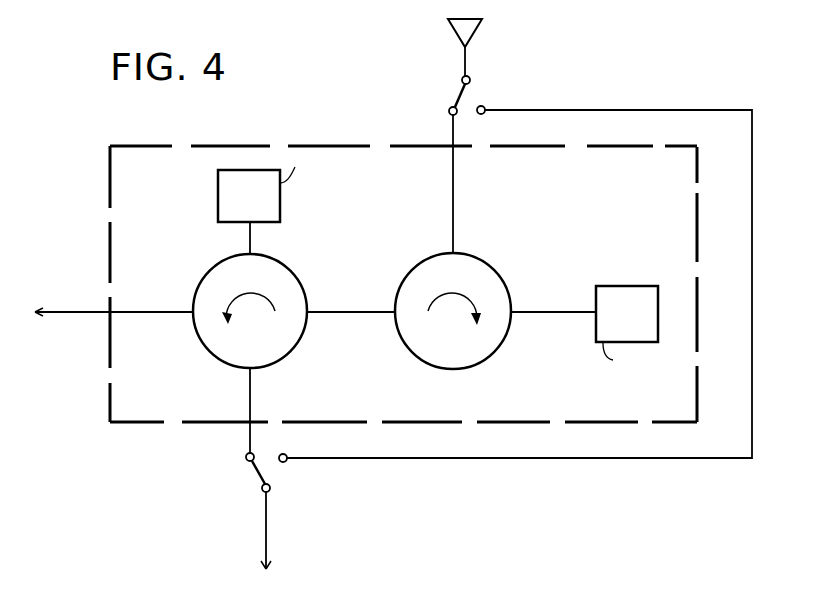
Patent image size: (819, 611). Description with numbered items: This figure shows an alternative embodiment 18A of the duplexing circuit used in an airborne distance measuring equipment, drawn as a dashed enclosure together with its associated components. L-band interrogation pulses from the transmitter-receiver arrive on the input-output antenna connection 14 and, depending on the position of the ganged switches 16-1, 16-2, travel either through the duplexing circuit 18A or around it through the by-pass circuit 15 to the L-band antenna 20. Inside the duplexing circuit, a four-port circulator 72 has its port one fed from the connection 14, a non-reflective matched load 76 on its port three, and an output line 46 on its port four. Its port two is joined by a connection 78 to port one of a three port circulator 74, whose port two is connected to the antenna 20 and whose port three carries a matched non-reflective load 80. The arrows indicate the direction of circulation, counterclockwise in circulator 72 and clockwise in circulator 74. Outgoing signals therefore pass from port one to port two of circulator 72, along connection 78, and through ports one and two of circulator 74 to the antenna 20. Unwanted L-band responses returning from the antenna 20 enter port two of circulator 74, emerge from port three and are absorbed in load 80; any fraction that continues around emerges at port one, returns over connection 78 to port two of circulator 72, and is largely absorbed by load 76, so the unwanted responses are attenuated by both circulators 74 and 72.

The input-output antenna connection 14 is at (267, 545).
The by-pass circuit 15 is at (752, 270).
The ganged switch 16-1 is at (457, 98).
The ganged switch 16-2 is at (257, 470).
The duplexing circuit embodiment 18A is at (318, 145).
The L-band antenna 20 is at (476, 30).
The output line 46 is at (72, 310).
The four-port circulator 72 is at (200, 277).
The three port circulator 74 is at (400, 270).
The non-reflective matched load 76 is at (280, 193).
The connection 78 is at (352, 315).
The matched non-reflective load 80 is at (627, 285).